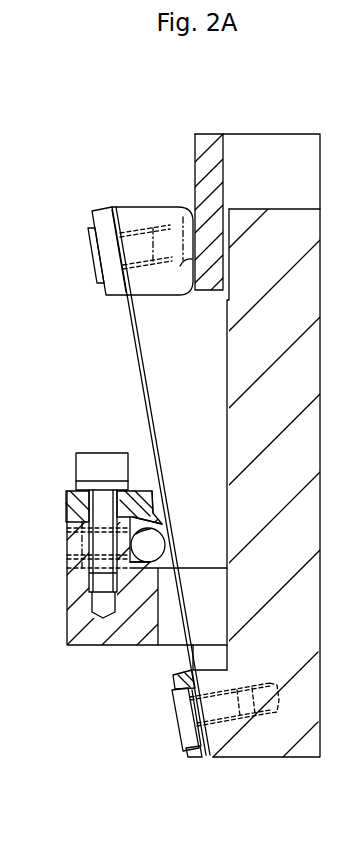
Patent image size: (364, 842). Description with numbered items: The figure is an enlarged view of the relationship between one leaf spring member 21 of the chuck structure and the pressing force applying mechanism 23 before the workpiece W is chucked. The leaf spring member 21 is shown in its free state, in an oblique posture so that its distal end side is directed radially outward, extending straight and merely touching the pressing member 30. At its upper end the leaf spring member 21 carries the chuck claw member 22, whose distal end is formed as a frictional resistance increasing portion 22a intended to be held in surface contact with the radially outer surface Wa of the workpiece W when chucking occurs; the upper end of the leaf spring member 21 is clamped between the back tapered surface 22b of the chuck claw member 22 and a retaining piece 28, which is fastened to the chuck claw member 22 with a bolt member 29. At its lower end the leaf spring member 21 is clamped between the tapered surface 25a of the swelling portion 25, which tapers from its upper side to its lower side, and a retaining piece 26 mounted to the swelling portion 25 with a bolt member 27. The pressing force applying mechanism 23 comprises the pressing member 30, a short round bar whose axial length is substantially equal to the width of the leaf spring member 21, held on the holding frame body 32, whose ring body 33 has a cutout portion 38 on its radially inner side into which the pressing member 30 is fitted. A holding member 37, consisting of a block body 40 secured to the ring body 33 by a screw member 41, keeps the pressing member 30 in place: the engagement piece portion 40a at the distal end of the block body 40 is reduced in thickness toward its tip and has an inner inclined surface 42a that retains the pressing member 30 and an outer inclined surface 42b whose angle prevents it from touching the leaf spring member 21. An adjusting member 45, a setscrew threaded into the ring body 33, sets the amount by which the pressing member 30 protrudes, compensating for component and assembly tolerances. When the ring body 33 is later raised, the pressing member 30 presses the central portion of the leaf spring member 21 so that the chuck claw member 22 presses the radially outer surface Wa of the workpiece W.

The workpiece W is at (282, 128).
The radially outer surface of the workpiece Wa is at (195, 158).
The leaf spring member 21 is at (126, 363).
The chuck claw member 22 is at (138, 217).
The frictional resistance increasing portion 22a is at (180, 266).
The back tapered surface 22b is at (115, 232).
The pressing force applying mechanism 23 is at (199, 552).
The swelling portion 25 is at (226, 748).
The tapered surface 25a is at (185, 728).
The retaining piece 26 is at (190, 756).
The bolt member 27 is at (177, 705).
The retaining piece 28 is at (98, 217).
The bolt member 29 is at (88, 268).
The pressing member 30 is at (150, 548).
The holding frame body 32 is at (80, 657).
The ring body 33 is at (80, 615).
The holding member 37 is at (146, 474).
The cutout portion 38 is at (152, 565).
The block body 40 is at (58, 506).
The engagement piece portion 40a is at (160, 513).
The screw member 41 is at (90, 463).
The inner inclined surface 42a is at (150, 528).
The outer inclined surface 42b is at (147, 513).
The adjusting member 45 is at (82, 546).